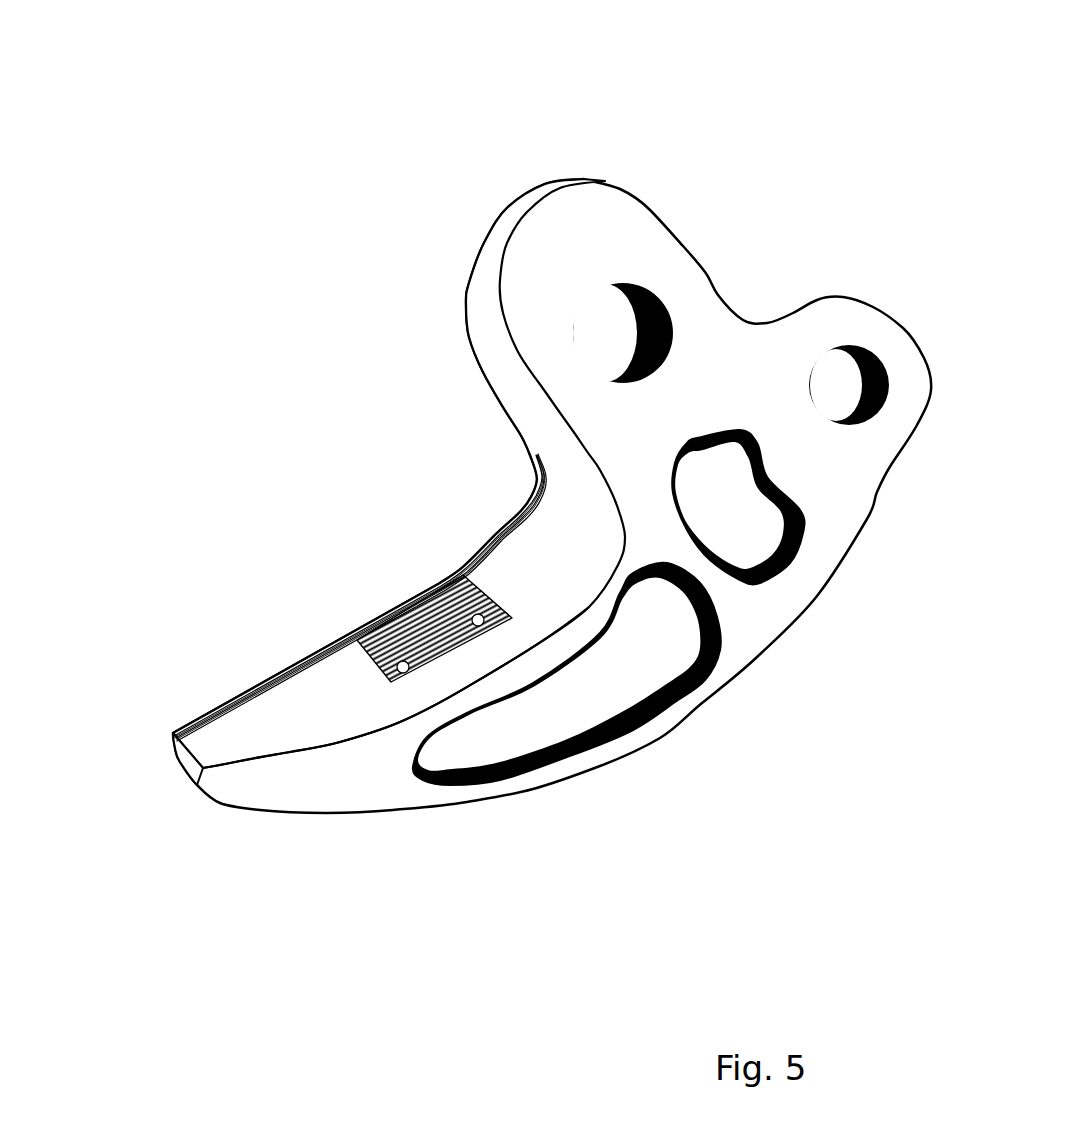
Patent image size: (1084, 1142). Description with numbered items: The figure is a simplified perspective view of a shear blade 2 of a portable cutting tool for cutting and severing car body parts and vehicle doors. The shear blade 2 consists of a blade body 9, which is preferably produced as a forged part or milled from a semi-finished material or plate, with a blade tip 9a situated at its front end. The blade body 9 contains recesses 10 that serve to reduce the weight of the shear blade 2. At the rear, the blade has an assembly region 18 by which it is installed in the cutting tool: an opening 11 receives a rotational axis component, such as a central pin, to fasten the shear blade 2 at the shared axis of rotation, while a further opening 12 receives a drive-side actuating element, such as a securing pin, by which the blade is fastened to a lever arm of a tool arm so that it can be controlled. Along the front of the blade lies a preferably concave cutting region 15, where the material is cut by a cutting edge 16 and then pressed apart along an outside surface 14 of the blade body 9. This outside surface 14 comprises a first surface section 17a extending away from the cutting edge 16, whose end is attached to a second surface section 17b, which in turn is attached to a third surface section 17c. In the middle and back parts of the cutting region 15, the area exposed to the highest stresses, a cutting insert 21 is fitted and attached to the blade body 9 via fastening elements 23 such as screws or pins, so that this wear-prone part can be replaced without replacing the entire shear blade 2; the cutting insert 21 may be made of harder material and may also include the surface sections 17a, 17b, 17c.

The shear blade 2 is at (484, 44).
The blade body 9 is at (337, 800).
The blade tip 9a is at (177, 762).
The recesses 10 is at (645, 687).
The opening 11 is at (615, 323).
The opening 12 is at (847, 380).
The outside surface 14 is at (276, 715).
The cutting region 15 is at (309, 551).
The cutting edge 16 is at (227, 694).
The first surface section 17a is at (477, 553).
The second surface section 17b is at (333, 653).
The third surface section 17c is at (303, 685).
The assembly region 18 is at (485, 202).
The cutting insert 21 is at (393, 630).
The fastening elements 23 is at (478, 620).